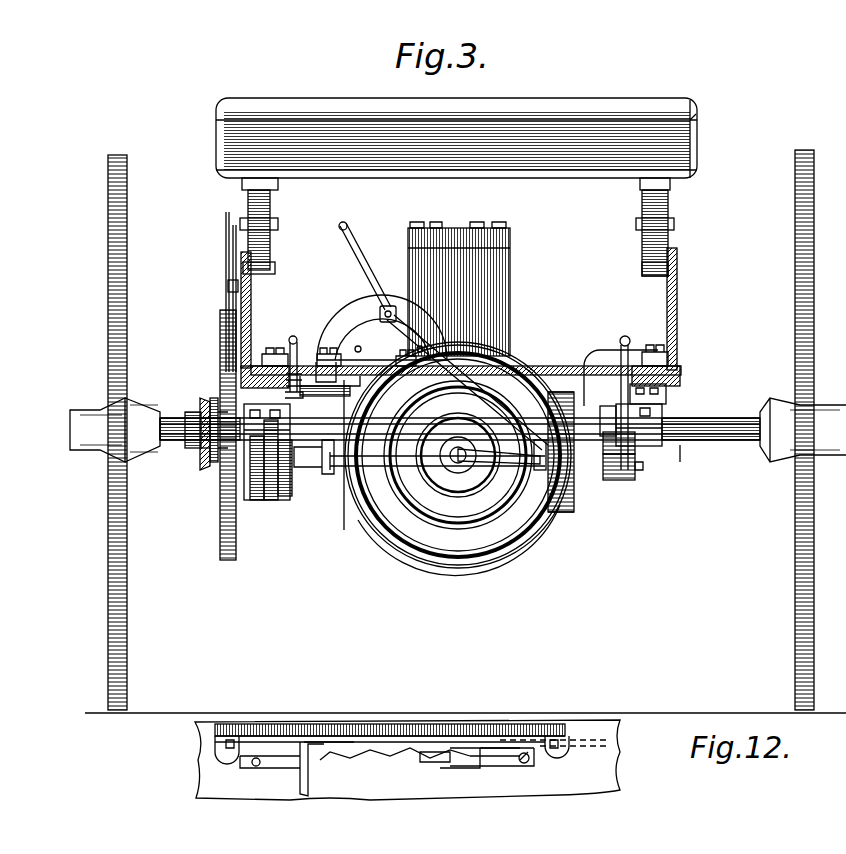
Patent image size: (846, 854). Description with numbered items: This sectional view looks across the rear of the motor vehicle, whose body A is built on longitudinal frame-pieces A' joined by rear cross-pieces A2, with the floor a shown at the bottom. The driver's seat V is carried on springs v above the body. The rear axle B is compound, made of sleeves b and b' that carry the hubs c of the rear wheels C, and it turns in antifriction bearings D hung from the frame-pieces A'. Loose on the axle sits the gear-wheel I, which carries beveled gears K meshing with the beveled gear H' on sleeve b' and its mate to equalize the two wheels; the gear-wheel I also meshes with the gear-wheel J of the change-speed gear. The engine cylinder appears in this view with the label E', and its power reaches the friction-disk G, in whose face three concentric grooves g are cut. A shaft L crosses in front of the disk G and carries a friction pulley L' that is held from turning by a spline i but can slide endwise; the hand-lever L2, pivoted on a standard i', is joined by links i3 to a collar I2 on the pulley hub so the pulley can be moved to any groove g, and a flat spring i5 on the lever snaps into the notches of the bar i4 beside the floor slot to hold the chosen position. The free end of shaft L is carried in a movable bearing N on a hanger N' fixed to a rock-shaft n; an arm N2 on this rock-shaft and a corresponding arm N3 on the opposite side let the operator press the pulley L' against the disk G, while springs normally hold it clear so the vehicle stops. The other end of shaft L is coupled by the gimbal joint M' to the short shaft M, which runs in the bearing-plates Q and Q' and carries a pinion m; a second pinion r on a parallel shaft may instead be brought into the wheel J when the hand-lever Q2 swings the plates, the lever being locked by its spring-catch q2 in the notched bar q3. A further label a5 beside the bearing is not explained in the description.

In FIG. 3, the seat V is at (456, 138).
In FIG. 3, the springs v is at (272, 208).
In FIG. 3, the body of the vehicle A is at (473, 309).
In FIG. 3, the longitudinal frame-pieces A' is at (473, 372).
In FIG. 3, the cross-pieces A2 is at (335, 380).
In FIG. 3, the hand-lever Q2 is at (232, 214).
In FIG. 3, the spring-catch q2 is at (231, 226).
In FIG. 3, the notched bar q3 is at (229, 285).
In FIG. 3, the cylinder E' is at (472, 289).
In FIG. 3, the standard i' is at (382, 322).
In FIG. 12, the standard i' is at (470, 768).
In FIG. 3, the bracket a5 is at (332, 360).
In FIG. 3, the arm N3 is at (296, 344).
In FIG. 3, the hand-lever L2 is at (360, 256).
In FIG. 3, the disk G is at (562, 540).
In FIG. 3, the grooves g is at (510, 550).
In FIG. 3, the spline i is at (449, 478).
In FIG. 3, the links i3 is at (494, 452).
In FIG. 3, the notched bar i4 is at (536, 450).
In FIG. 12, the notched bar i4 is at (338, 760).
In FIG. 3, the universal joint M' is at (419, 474).
In FIG. 3, the bottom of the vehicle-body a is at (552, 366).
In FIG. 12, the bottom of the vehicle-body a is at (555, 765).
In FIG. 3, the friction pulley L' is at (570, 452).
In FIG. 3, the shaft L is at (475, 462).
In FIG. 3, the arm N2 is at (628, 344).
In FIG. 3, the rock-shaft n is at (668, 394).
In FIG. 3, the bearings D is at (622, 426).
In FIG. 3, the hanger N' is at (653, 453).
In FIG. 3, the movable bearing N is at (634, 476).
In FIG. 3, the rear axle B is at (724, 418).
In FIG. 3, the tube of the axle b is at (708, 454).
In FIG. 3, the hubs c is at (142, 412).
In FIG. 3, the rear supporting-wheels C is at (121, 352).
In FIG. 3, the tube of the axle b' is at (172, 417).
In FIG. 3, the gear-wheel J is at (214, 400).
In FIG. 3, the beveled gear H' is at (197, 434).
In FIG. 3, the beveled gears K is at (192, 452).
In FIG. 3, the gear-pinion r is at (204, 456).
In FIG. 3, the gear-pinion m is at (224, 470).
In FIG. 3, the gear-wheel I is at (236, 556).
In FIG. 3, the bearing-plate Q is at (252, 480).
In FIG. 3, the bearing-plate Q' is at (269, 472).
In FIG. 3, the short shaft M is at (286, 482).
In FIG. 12, the collar I2 is at (322, 742).
In FIG. 12, the flat spring i5 is at (458, 760).